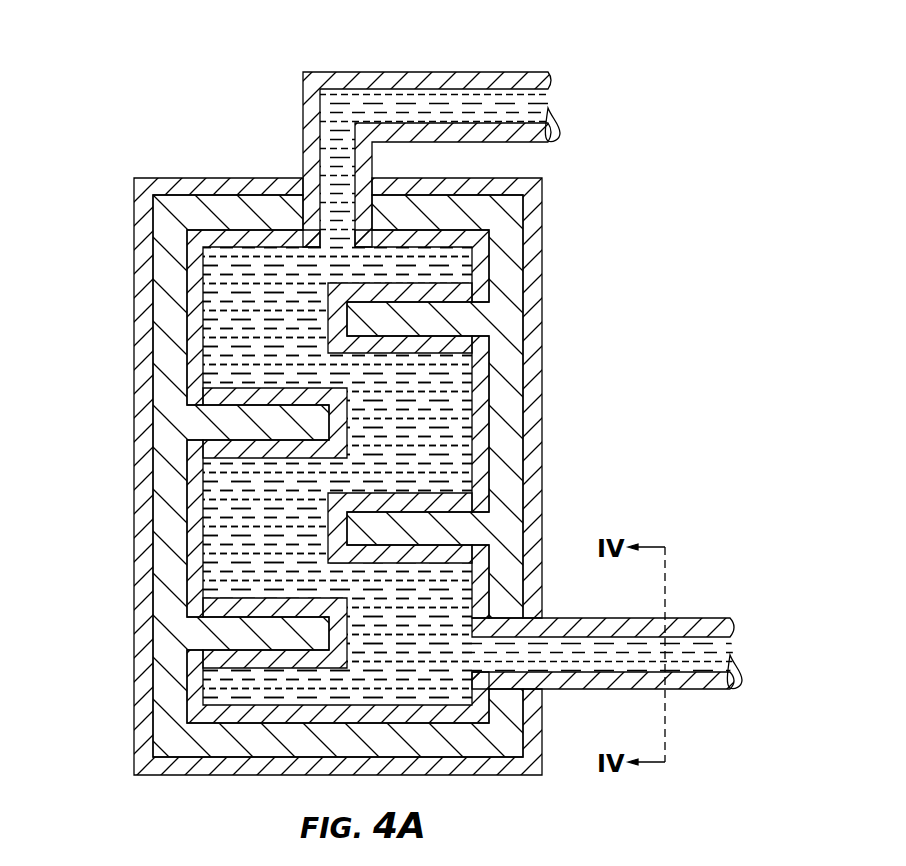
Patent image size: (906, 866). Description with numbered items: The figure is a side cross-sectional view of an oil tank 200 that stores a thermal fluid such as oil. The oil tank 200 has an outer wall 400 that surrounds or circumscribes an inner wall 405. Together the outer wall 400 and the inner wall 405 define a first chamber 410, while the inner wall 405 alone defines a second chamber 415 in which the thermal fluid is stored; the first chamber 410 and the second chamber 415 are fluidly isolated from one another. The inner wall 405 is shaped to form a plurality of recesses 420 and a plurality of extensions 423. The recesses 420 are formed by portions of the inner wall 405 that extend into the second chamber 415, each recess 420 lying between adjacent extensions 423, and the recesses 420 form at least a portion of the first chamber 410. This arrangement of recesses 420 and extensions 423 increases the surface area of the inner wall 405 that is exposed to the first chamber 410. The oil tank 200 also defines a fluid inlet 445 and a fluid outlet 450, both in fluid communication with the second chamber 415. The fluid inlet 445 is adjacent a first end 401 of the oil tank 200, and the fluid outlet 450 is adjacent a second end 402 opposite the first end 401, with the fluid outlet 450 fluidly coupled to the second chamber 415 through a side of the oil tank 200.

The oil tank 200 is at (724, 93).
The first end 401 is at (330, 40).
The outer wall 400 is at (137, 221).
The second end 402 is at (218, 788).
The inner wall 405 is at (192, 330).
The first chamber 410 is at (232, 212).
The second chamber 415 is at (242, 497).
The recesses 420 is at (258, 436).
The extensions 423 is at (195, 290).
The fluid inlet 445 is at (507, 80).
The fluid outlet 450 is at (690, 692).